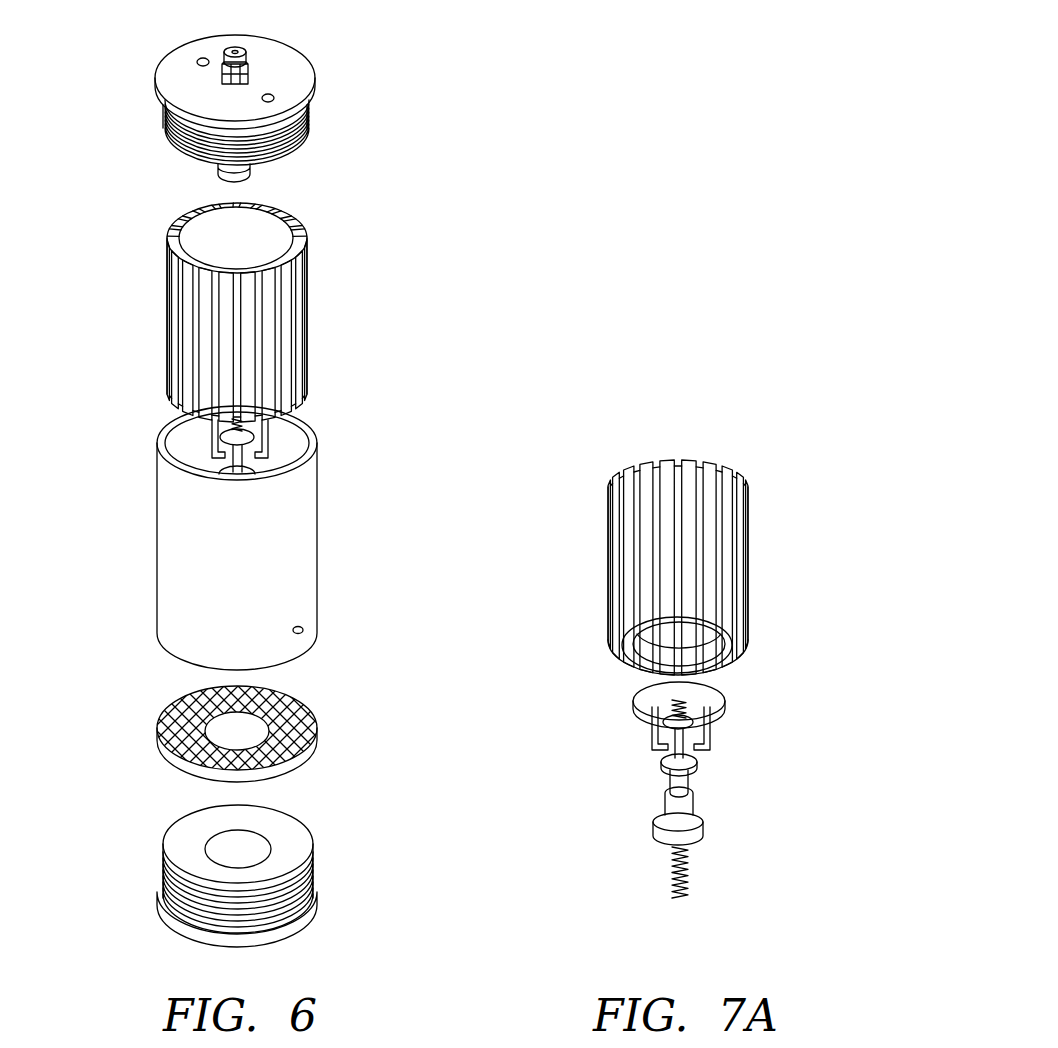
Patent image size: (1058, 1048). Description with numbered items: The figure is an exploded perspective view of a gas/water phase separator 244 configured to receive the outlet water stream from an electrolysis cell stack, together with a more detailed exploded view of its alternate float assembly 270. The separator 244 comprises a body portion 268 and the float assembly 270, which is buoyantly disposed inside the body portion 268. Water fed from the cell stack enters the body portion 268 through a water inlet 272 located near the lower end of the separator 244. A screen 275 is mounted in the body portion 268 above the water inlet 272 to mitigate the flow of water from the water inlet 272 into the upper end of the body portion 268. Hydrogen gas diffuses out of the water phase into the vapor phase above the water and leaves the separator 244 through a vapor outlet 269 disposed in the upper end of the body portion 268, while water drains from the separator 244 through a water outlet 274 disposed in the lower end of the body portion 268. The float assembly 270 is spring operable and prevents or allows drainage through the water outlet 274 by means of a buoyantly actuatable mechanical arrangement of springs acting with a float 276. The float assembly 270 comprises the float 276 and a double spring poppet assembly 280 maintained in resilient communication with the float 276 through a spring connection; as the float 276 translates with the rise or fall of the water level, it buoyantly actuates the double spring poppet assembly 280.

In FIG. 6, the separator 244 is at (388, 140).
In FIG. 6, the vapor outlet 269 is at (250, 65).
In FIG. 6, the float assembly 270 is at (327, 203).
In FIG. 7A, the float assembly 270 is at (772, 631).
In FIG. 6, the body portion 268 is at (157, 523).
In FIG. 6, the water inlet 272 is at (304, 629).
In FIG. 6, the screen 275 is at (320, 730).
In FIG. 6, the water outlet 274 is at (255, 847).
In FIG. 7A, the float 276 is at (752, 567).
In FIG. 7A, the double spring poppet assembly 280 is at (732, 680).